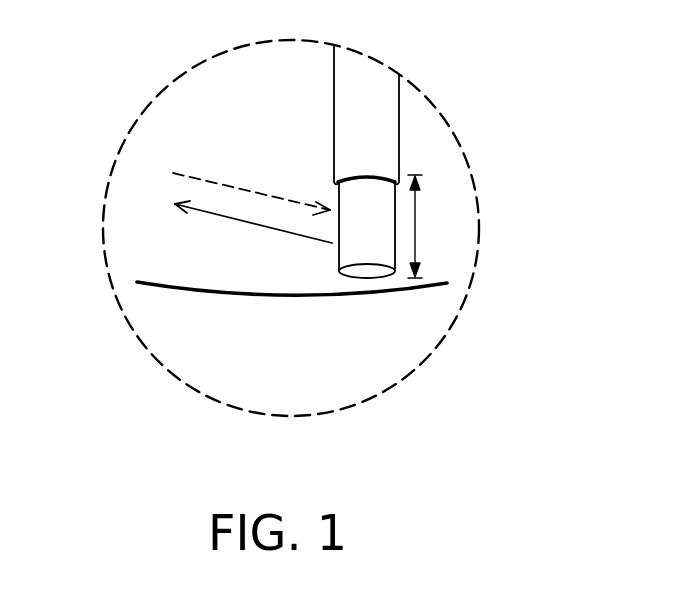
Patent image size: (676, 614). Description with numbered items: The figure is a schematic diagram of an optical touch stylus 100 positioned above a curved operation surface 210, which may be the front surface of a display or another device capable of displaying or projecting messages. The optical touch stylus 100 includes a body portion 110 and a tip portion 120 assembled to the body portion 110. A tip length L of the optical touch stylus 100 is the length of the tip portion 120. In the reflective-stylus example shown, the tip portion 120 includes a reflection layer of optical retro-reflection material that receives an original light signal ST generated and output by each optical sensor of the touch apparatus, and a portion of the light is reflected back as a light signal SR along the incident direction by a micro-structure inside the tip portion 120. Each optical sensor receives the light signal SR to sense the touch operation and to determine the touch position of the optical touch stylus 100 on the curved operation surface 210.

The optical touch stylus 100 is at (588, 65).
The body portion 110 is at (372, 100).
The tip portion 120 is at (365, 193).
The curved operation surface 210 is at (158, 287).
The original light signal ST is at (200, 182).
The light signal SR is at (258, 222).
The tip length L is at (423, 226).